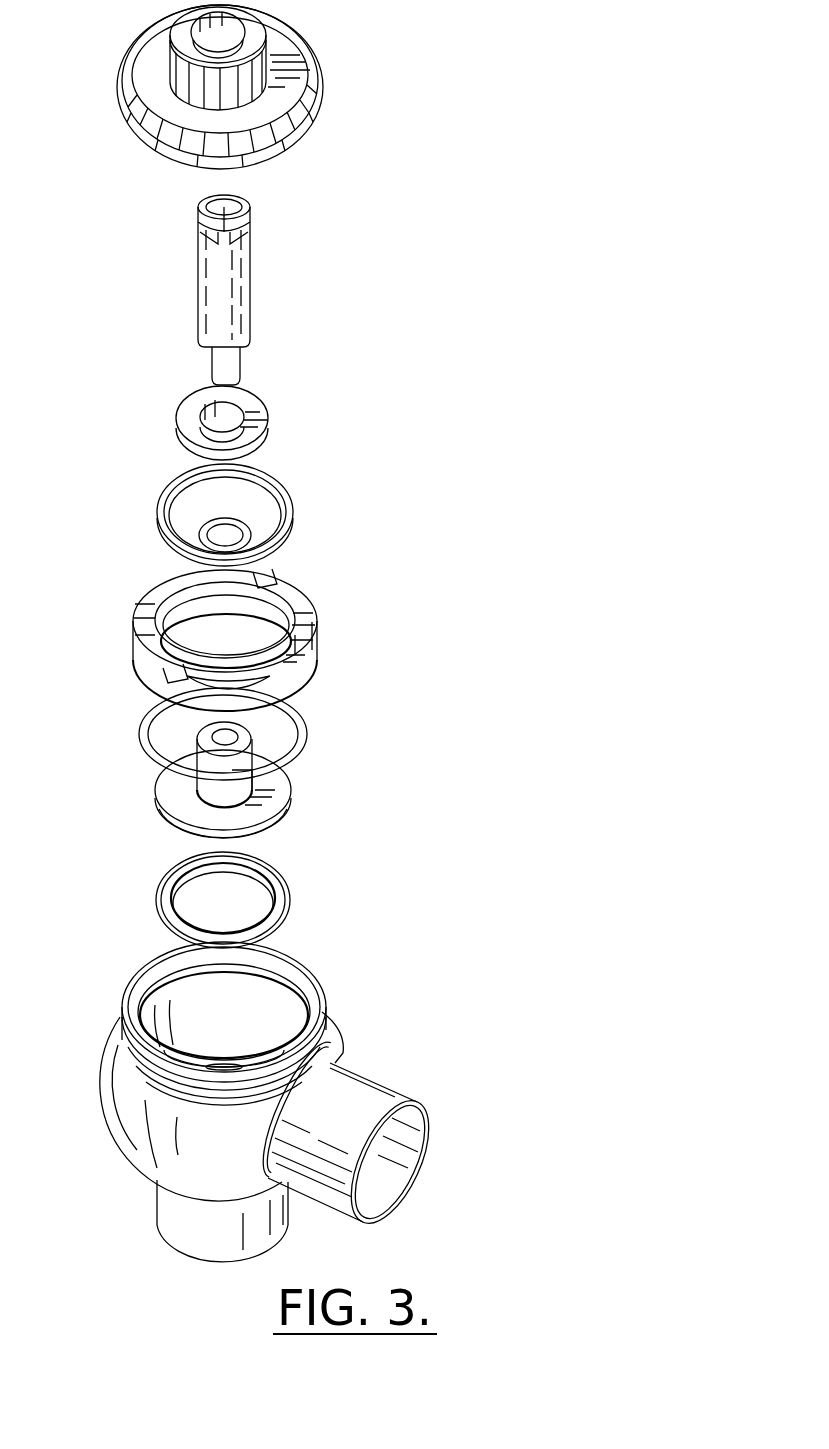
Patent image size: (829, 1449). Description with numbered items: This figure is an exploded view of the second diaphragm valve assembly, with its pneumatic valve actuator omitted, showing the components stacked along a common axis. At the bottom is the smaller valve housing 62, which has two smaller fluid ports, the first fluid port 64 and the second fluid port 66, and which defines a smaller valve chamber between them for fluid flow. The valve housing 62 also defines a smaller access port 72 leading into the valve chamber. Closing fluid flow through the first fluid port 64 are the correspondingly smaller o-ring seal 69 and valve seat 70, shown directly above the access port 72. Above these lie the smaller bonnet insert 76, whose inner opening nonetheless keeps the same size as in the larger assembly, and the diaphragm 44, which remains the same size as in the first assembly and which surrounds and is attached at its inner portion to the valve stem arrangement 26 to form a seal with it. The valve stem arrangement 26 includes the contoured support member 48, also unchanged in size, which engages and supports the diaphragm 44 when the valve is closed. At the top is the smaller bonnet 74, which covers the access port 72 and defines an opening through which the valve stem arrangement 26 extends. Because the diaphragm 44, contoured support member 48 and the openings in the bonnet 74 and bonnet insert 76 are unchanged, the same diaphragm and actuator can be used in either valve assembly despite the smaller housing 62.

The bonnet 74 is at (313, 90).
The valve stem arrangement 26 is at (243, 280).
The contoured support member 48 is at (268, 418).
The diaphragm 44 is at (294, 502).
The bonnet insert 76 is at (315, 622).
The valve seat 70 is at (288, 790).
The o-ring seal 69 is at (287, 895).
The access port 72 is at (256, 1019).
The valve housing 62 is at (128, 1100).
The first fluid port 64 is at (217, 1270).
The fluid port 66 is at (396, 1161).